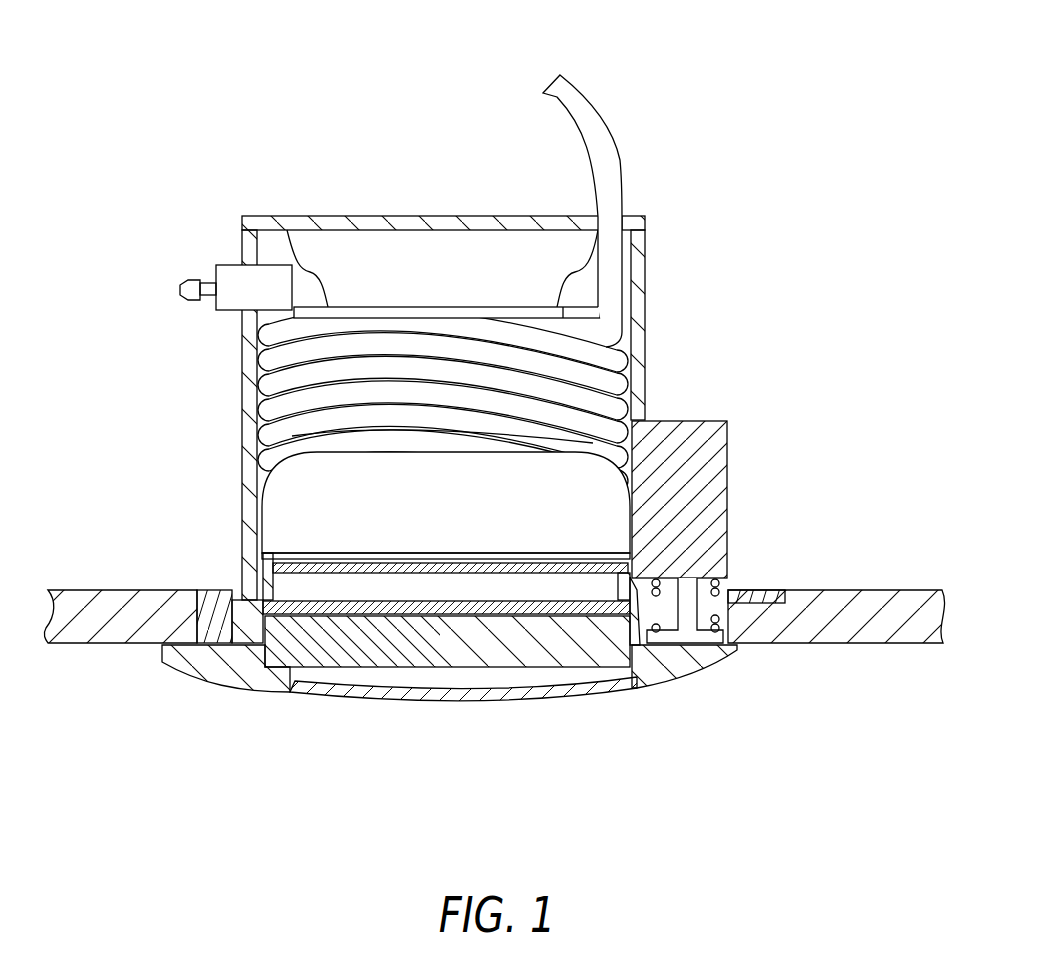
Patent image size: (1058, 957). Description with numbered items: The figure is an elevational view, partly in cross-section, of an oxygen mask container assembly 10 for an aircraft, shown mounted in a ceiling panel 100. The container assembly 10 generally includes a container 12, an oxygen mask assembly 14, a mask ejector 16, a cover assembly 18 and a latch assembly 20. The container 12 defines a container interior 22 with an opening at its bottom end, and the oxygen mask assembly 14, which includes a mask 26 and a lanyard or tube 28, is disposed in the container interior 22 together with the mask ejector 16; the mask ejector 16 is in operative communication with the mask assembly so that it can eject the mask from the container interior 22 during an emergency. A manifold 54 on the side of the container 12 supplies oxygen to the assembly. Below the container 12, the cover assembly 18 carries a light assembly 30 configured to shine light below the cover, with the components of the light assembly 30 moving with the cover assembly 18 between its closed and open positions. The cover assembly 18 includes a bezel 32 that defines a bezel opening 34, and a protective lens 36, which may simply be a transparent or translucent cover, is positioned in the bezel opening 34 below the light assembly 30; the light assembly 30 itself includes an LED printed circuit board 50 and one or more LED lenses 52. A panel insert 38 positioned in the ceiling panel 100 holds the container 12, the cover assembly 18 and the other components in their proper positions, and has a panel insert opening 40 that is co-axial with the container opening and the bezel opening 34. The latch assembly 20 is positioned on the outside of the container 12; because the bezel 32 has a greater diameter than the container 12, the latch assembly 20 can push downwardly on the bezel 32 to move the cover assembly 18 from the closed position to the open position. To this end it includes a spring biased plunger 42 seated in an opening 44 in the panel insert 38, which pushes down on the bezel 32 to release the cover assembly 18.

The oxygen mask container assembly 10 is at (756, 101).
The container 12 is at (650, 263).
The oxygen mask assembly 14 is at (631, 343).
The mask ejector 16 is at (377, 243).
The cover assembly 18 is at (350, 738).
The latch assembly 20 is at (757, 466).
The container interior 22 is at (262, 478).
The mask 26 is at (278, 525).
The lanyard or tube 28 is at (272, 385).
The light assembly 30 is at (531, 663).
The bezel 32 is at (672, 668).
The bezel opening 34 is at (330, 685).
The protective lens 36 is at (497, 690).
The panel insert 38 is at (212, 603).
The panel insert opening 40 is at (268, 588).
The spring biased plunger 42 is at (688, 635).
The opening 44 is at (715, 602).
The LED printed circuit board 50 is at (398, 605).
The LED lens 52 is at (428, 658).
The manifold 54 is at (232, 270).
The ceiling panel 100 is at (915, 640).